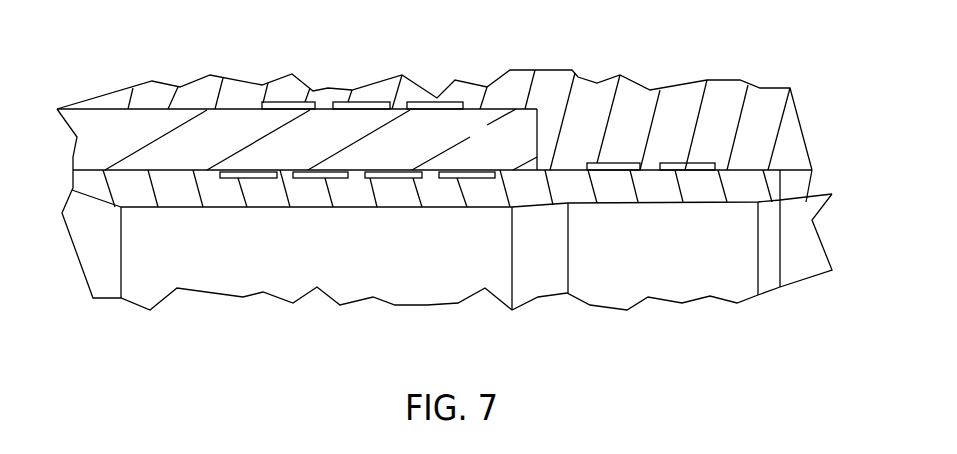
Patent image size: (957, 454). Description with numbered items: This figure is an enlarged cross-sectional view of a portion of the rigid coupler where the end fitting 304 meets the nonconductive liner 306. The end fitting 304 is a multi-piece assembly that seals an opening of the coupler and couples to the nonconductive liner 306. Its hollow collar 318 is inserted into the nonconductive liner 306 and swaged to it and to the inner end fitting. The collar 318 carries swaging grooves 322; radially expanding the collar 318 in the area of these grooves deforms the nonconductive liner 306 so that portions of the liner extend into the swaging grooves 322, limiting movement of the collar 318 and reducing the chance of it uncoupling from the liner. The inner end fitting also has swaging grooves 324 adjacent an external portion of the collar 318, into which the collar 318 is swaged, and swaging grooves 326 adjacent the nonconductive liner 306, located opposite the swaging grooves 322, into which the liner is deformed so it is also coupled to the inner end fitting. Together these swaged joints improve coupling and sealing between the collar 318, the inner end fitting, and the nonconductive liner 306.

The end fitting 304 is at (770, 107).
The nonconductive liner 306 is at (325, 120).
The collar 318 is at (773, 182).
The swaging grooves 322 is at (483, 158).
The swaging grooves 324 is at (704, 150).
The swaging grooves 326 is at (378, 94).